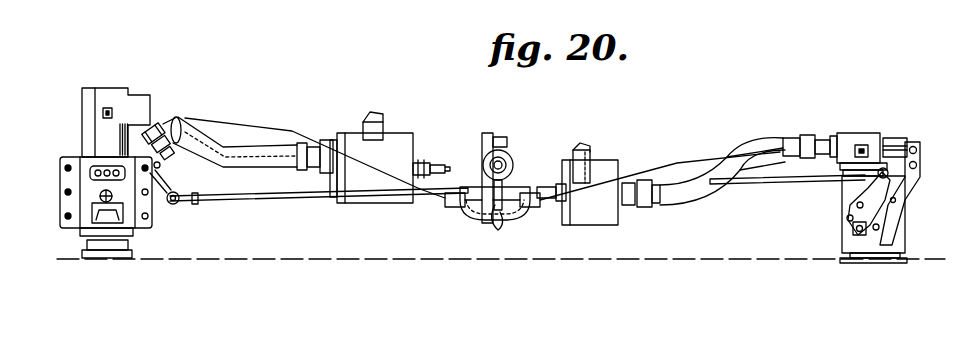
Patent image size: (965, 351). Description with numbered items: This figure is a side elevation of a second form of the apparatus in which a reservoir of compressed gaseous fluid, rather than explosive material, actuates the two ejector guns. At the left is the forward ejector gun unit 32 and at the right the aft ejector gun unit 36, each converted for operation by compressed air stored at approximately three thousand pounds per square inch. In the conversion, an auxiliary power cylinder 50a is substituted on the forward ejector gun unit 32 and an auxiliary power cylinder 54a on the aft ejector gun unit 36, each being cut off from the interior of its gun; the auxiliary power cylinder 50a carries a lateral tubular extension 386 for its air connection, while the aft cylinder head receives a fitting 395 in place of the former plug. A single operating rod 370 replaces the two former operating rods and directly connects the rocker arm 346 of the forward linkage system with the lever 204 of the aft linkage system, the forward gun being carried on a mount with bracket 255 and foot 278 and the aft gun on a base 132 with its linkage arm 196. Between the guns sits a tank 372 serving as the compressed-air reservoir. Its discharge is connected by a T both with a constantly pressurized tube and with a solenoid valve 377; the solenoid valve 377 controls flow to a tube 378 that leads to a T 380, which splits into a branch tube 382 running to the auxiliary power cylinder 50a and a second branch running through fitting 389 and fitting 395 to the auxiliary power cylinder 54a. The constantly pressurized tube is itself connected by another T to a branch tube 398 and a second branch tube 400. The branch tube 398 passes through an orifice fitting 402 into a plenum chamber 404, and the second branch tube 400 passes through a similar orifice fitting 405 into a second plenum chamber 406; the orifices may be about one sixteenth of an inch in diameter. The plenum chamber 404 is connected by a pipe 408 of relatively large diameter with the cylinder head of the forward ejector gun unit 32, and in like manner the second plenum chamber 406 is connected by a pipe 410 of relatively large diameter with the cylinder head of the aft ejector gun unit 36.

The forward ejector gun unit 32 is at (75, 107).
The auxiliary power cylinder 50a is at (163, 124).
The lateral tubular extension 386 is at (165, 138).
The pipe 408 is at (228, 162).
The orifice fitting 402 is at (418, 162).
The branch tube 398 is at (442, 166).
The solenoid valve 377 is at (503, 150).
The orifice fitting 405 is at (563, 184).
The second plenum chamber 406 is at (608, 160).
The fitting 395 is at (826, 137).
The aft ejector gun unit 36 is at (853, 132).
The auxiliary power cylinder 54a is at (897, 135).
The bracket 255 is at (55, 218).
The rocker arm 346 is at (163, 203).
The single operating rod 370 is at (241, 200).
The plenum chamber 404 is at (372, 204).
The branch tube 382 is at (440, 197).
The T 380 is at (466, 213).
The tube 378 is at (493, 222).
The tank 372 is at (503, 214).
The fitting 389 is at (522, 208).
The second branch tube 400 is at (545, 188).
The pipe 410 is at (683, 204).
The lever 204 is at (866, 180).
The link 196 is at (906, 186).
The base 132 is at (866, 258).
The base 278 is at (104, 258).